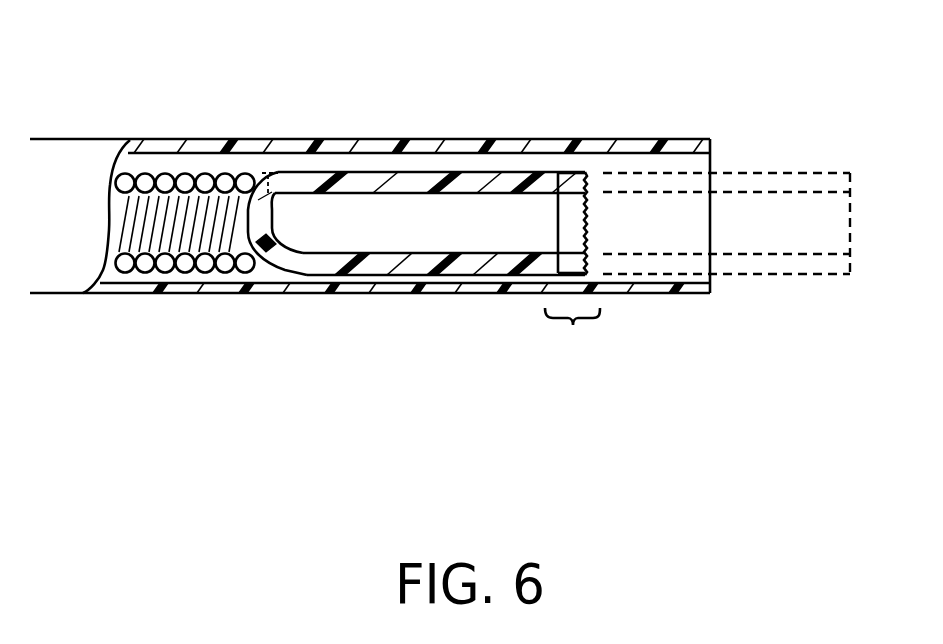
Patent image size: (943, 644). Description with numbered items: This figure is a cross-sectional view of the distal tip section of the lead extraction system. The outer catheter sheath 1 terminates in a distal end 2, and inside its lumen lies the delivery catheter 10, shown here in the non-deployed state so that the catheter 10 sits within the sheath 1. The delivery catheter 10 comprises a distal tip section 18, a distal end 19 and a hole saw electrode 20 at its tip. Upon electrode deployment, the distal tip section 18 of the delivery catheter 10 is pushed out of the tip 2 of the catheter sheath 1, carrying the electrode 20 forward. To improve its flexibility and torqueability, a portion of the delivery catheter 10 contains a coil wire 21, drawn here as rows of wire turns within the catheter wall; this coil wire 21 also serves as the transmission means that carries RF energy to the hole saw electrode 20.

The catheter sheath 1 is at (382, 137).
The distal end 2 is at (717, 128).
The delivery catheter 10 is at (432, 170).
The distal tip section 18 is at (572, 342).
The distal end 19 is at (590, 172).
The hole saw electrode 20 is at (572, 225).
The coil wire 21 is at (180, 170).